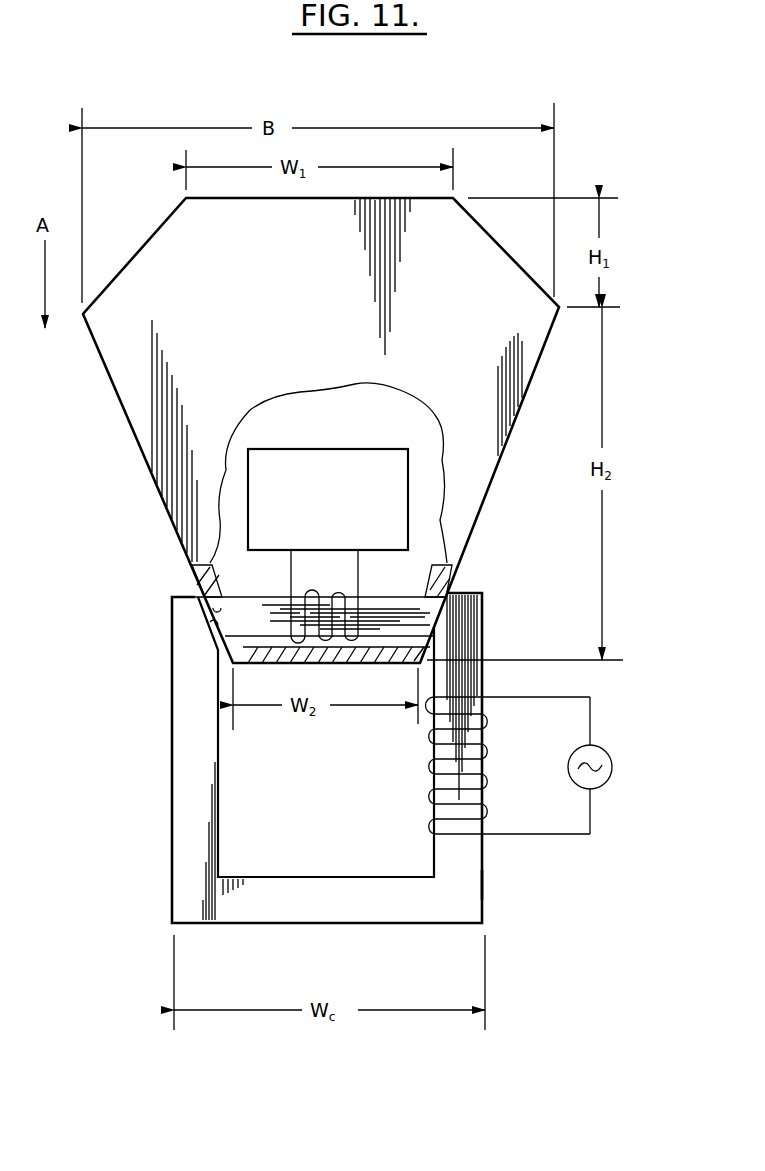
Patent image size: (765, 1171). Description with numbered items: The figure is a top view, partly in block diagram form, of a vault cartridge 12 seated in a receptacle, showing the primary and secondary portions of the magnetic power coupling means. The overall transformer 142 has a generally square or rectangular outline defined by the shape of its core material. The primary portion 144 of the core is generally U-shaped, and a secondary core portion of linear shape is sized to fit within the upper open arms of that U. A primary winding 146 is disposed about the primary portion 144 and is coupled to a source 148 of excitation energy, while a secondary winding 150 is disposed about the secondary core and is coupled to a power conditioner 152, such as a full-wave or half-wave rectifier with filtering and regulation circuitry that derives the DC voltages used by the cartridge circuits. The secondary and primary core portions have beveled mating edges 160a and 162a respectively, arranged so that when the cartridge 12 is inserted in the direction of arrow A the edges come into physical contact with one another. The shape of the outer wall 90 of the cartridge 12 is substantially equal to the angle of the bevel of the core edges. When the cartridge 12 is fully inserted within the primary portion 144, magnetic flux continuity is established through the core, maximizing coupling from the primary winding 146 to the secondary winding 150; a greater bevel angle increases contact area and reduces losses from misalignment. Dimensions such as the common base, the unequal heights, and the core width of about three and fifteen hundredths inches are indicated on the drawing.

The cartridge 12 is at (335, 277).
The outer wall 90 is at (450, 583).
The power transformer 142 is at (254, 597).
The primary portion 144 is at (484, 884).
The primary winding 146 is at (425, 768).
The source of excitation energy 148 is at (612, 757).
The secondary winding 150 is at (362, 567).
The power conditioner 152 is at (348, 449).
The beveled mating edge 160a is at (220, 609).
The beveled mating edge 162a is at (214, 627).